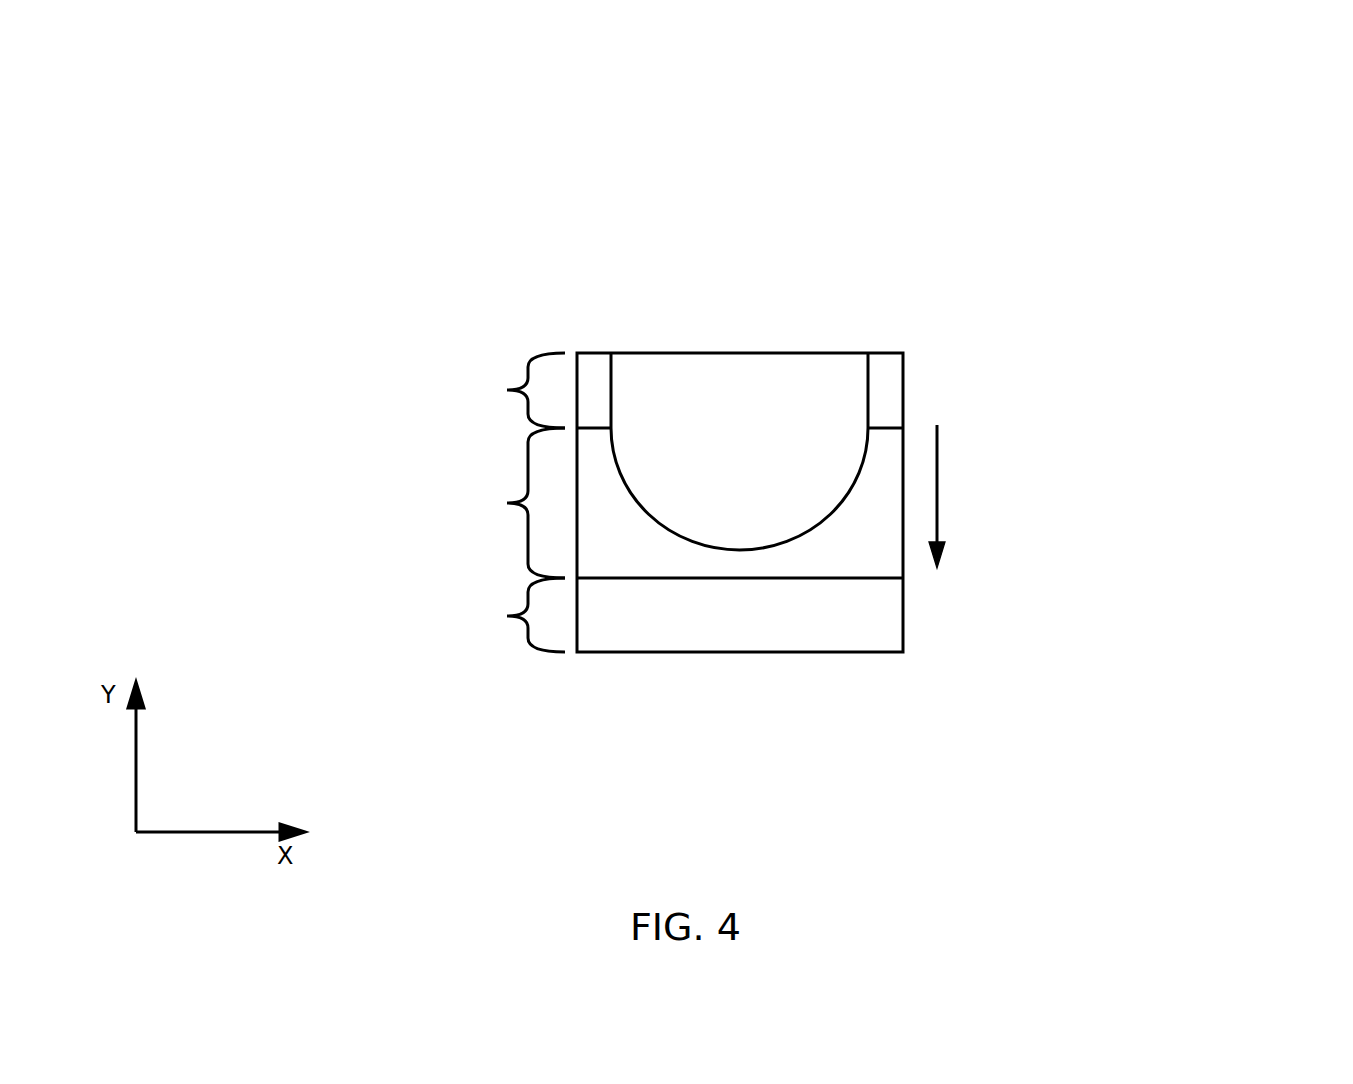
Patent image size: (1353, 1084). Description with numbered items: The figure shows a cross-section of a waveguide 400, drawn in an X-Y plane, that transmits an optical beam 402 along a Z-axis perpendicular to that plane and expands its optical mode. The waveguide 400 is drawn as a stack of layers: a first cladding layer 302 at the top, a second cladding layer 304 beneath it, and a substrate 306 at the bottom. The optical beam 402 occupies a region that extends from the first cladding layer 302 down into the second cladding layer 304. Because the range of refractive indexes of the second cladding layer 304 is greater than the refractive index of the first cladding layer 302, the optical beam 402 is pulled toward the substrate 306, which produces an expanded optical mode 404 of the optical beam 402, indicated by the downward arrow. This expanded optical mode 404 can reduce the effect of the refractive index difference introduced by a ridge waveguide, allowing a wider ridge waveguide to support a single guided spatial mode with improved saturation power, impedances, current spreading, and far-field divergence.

The waveguide 400 is at (1220, 107).
The first cladding layer 302 is at (598, 389).
The second cladding layer 304 is at (595, 503).
The substrate 306 is at (433, 615).
The optical beam 402 is at (743, 402).
The expanded optical mode 404 is at (1032, 496).